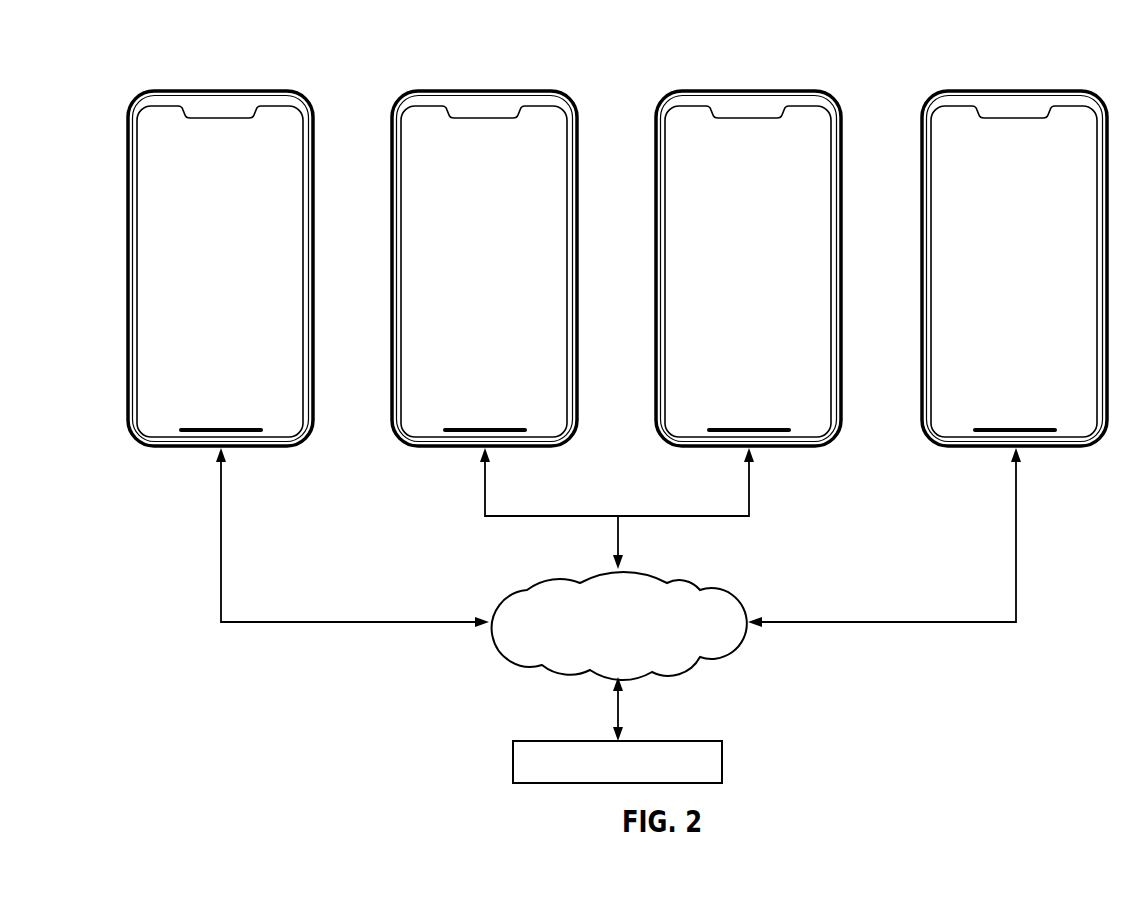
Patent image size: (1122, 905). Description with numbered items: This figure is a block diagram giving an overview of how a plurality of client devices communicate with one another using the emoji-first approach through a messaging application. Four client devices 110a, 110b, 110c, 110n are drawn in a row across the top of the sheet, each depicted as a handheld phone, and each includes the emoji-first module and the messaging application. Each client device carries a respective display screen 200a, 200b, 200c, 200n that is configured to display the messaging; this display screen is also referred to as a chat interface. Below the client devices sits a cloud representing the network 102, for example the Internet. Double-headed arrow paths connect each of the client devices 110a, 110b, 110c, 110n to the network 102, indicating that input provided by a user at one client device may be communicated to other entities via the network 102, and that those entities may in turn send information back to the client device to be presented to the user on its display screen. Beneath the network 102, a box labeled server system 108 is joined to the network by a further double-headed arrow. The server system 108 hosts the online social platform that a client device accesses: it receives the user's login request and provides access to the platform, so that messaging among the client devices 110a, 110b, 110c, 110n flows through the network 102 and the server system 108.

The client device 110a is at (193, 102).
The client device 110b is at (484, 241).
The client device 110c is at (748, 241).
The client device 110n is at (1014, 241).
The display screen 200a is at (222, 213).
The display screen 200b is at (491, 246).
The display screen 200c is at (755, 246).
The display screen 200n is at (1023, 246).
The network 102 is at (688, 580).
The server system 108 is at (724, 761).